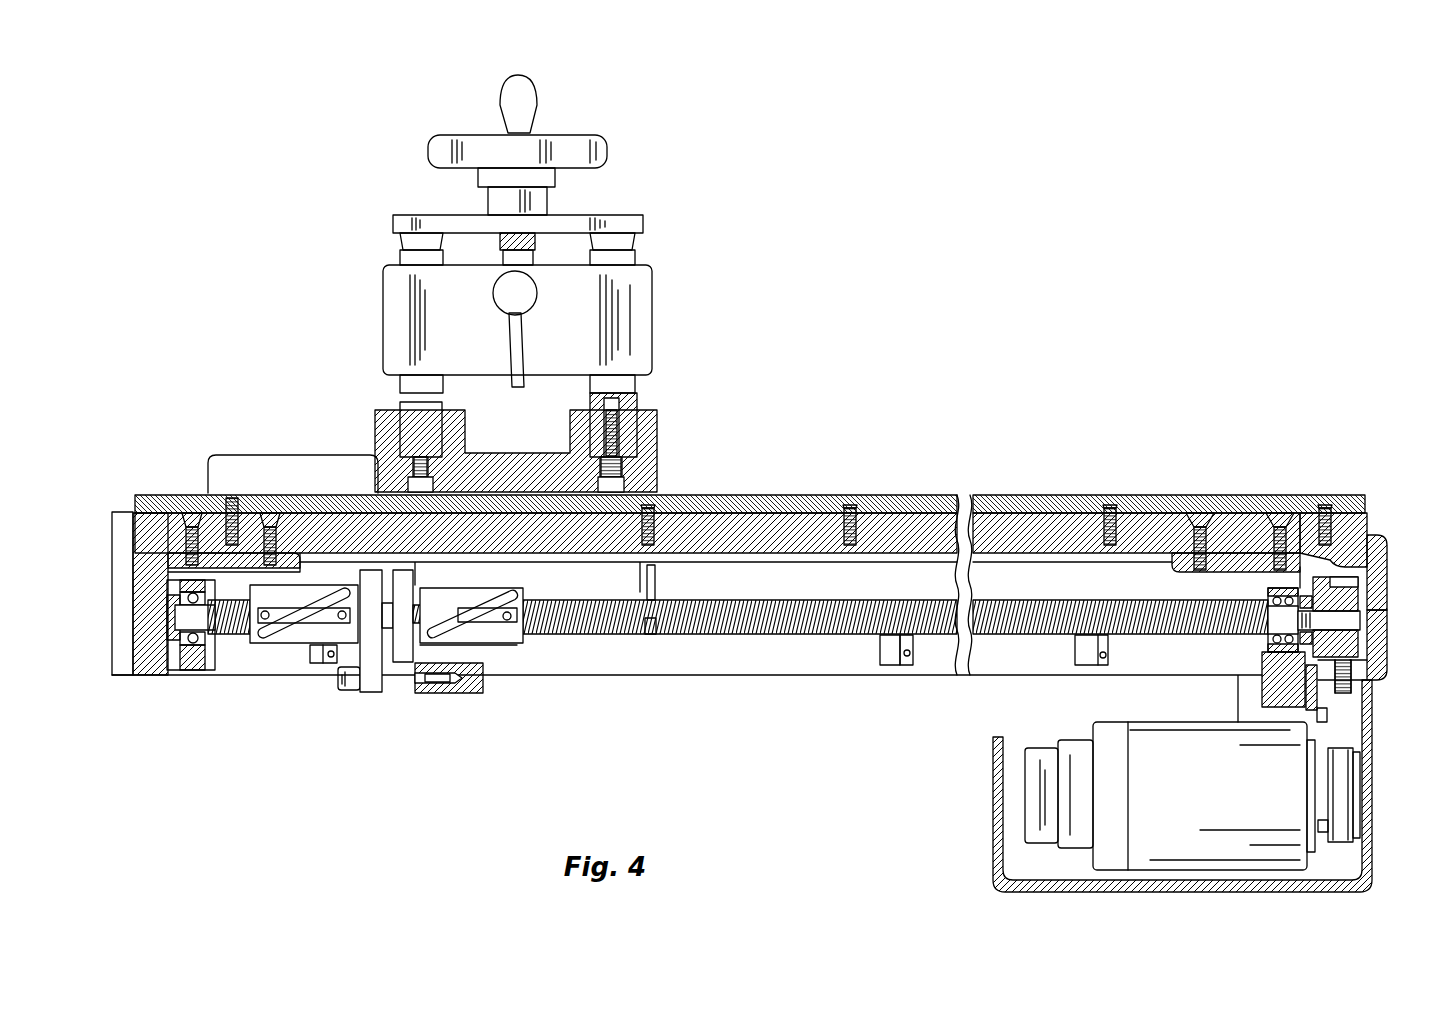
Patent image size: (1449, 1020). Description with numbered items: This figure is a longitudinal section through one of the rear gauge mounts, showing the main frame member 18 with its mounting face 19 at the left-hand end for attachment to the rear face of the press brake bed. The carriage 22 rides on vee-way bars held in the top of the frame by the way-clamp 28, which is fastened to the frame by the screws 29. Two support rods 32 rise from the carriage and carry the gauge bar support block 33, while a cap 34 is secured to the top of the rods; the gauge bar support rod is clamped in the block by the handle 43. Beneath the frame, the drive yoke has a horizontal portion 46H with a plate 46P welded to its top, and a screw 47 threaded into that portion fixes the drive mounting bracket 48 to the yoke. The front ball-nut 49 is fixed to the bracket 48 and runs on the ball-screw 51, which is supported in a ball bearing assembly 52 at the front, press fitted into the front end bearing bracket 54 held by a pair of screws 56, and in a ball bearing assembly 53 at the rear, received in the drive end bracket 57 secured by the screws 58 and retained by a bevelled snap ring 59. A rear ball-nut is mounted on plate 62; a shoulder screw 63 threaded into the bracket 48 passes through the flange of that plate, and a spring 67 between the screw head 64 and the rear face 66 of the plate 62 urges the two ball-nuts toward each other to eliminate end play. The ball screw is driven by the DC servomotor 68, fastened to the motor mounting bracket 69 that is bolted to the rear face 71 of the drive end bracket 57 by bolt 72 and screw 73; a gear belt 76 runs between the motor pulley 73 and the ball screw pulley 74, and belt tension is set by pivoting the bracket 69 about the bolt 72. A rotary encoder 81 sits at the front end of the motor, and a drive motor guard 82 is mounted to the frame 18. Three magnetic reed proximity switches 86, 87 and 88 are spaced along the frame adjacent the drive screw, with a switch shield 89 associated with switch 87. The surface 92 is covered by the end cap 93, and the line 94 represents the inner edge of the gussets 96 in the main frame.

The main frame member 18 is at (733, 512).
The mounting face 19 is at (112, 630).
The carriage 22 is at (658, 453).
The way-clamp 28 is at (1165, 512).
The screws 29 is at (853, 510).
The support rods 32 is at (410, 432).
The gauge bar support block 33 is at (655, 287).
The cap 34 is at (628, 218).
The handle 43 is at (512, 390).
The plate 46P is at (484, 678).
The horizontal portion 46H is at (465, 695).
The screw 47 is at (345, 692).
The drive mounting bracket 48 is at (372, 692).
The front ball-nut 49 is at (263, 645).
The ball-screw 51 is at (748, 637).
The ball bearing assembly 52 is at (190, 600).
The ball bearing assembly 53 is at (1265, 680).
The front end bearing bracket 54 is at (160, 562).
The screws 56 is at (192, 522).
The drive end bracket 57 is at (1185, 570).
The screws 58 is at (1202, 520).
The bevelled snap ring 59 is at (1266, 646).
The ball-nut mounting plate 62 is at (403, 665).
The shoulder screw 63 is at (425, 605).
The screw head 64 is at (457, 617).
The rear face 66 is at (446, 685).
The spring 67 is at (435, 603).
The DC servomotor 68 is at (1180, 872).
The motor mounting bracket 69 is at (1333, 850).
The rear face 71 is at (1318, 693).
The bolt 72 is at (1325, 715).
The motor pulley 73 is at (1358, 808).
The ball screw pulley 74 is at (1350, 598).
The gear belt 76 is at (1343, 767).
The rotary encoder 81 is at (1032, 818).
The drive motor guard 82 is at (1372, 848).
The proximity switch 86 is at (322, 665).
The proximity switch 87 is at (912, 658).
The proximity switch 88 is at (1098, 666).
The switch shield 89 is at (892, 667).
The surface 92 is at (1387, 553).
The end cap 93 is at (1387, 653).
The line 94 is at (650, 634).
The gussets 96 is at (656, 590).